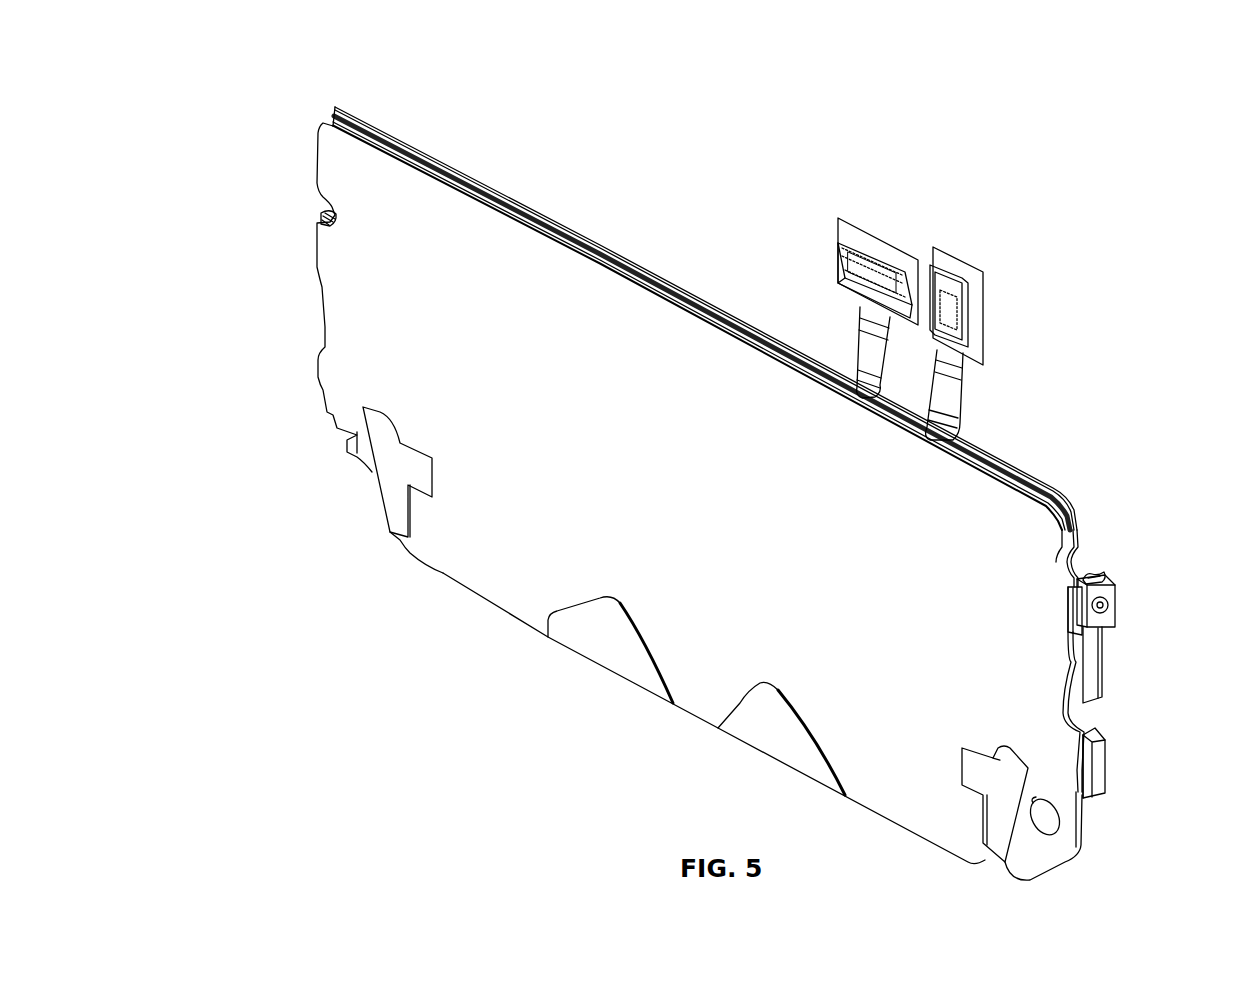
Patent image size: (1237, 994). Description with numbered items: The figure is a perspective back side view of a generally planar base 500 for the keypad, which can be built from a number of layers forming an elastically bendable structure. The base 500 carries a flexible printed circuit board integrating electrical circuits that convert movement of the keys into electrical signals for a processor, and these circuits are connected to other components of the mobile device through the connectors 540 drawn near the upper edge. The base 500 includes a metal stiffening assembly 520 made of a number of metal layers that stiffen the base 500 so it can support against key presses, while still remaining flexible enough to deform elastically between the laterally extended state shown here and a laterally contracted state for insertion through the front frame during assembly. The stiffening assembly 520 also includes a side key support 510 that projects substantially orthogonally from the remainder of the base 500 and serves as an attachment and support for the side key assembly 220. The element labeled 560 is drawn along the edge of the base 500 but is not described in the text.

The base 500 is at (268, 68).
The connectors 540 is at (967, 302).
The flexible strip 560 is at (1075, 512).
The side key support 510 is at (1108, 576).
The side key assembly 220 is at (1117, 613).
The metal stiffening assembly 520 is at (1065, 850).